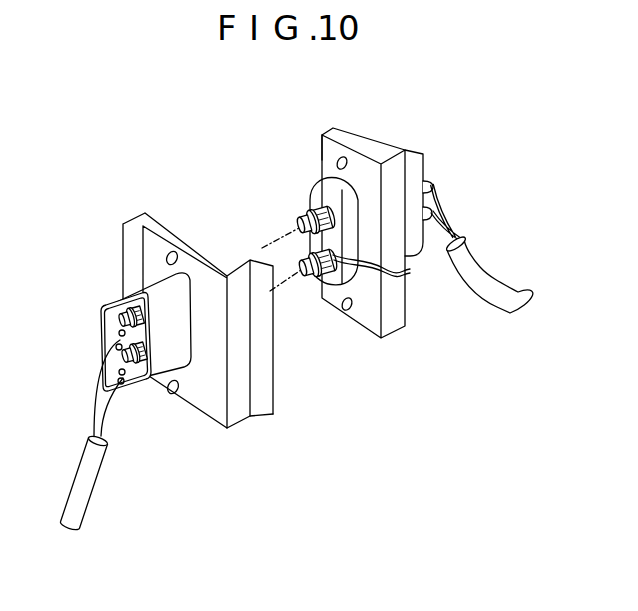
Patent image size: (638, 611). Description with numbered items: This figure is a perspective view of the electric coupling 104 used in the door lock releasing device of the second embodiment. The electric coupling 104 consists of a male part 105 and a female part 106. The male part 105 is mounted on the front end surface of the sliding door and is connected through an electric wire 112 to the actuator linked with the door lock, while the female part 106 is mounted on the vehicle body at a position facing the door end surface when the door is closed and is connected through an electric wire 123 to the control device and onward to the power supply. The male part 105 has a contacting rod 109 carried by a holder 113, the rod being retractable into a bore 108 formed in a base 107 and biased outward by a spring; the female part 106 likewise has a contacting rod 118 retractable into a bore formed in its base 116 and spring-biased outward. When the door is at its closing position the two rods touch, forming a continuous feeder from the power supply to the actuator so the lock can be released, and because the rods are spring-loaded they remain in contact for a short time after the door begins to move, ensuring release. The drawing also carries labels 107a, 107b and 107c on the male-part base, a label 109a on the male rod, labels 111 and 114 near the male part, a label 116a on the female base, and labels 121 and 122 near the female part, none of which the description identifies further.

The electric coupling 104 is at (205, 151).
The male part 105 is at (360, 132).
The female part 106 is at (186, 221).
The base 107 is at (376, 150).
The side portion of housing block 107a is at (418, 157).
The raised boss 107b is at (312, 192).
The front face edge of housing block 107c is at (322, 141).
The bore 108 is at (388, 270).
The contacting rod 109 is at (297, 215).
The contact pin 109a is at (297, 227).
The wires 111 is at (438, 211).
The electric wire 112 is at (479, 291).
The holder 113 is at (311, 199).
The nut flange 114 is at (309, 212).
The base 116 is at (155, 258).
The bottom portion of V-block 116a is at (237, 409).
The contacting rod 118 is at (140, 292).
The connector terminals 121 is at (149, 331).
The wires 122 is at (94, 409).
The electric wire 123 is at (88, 484).